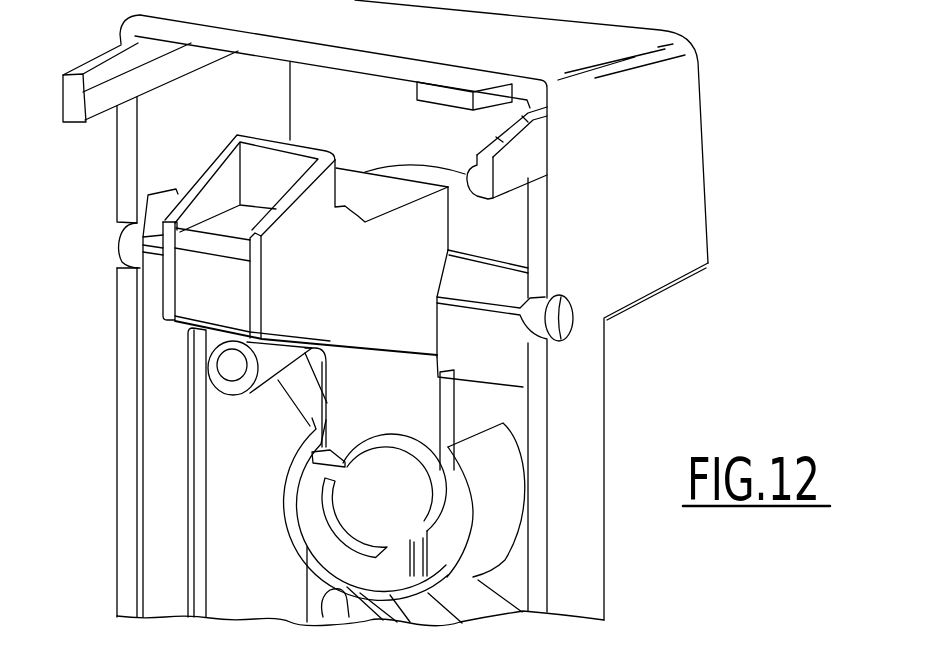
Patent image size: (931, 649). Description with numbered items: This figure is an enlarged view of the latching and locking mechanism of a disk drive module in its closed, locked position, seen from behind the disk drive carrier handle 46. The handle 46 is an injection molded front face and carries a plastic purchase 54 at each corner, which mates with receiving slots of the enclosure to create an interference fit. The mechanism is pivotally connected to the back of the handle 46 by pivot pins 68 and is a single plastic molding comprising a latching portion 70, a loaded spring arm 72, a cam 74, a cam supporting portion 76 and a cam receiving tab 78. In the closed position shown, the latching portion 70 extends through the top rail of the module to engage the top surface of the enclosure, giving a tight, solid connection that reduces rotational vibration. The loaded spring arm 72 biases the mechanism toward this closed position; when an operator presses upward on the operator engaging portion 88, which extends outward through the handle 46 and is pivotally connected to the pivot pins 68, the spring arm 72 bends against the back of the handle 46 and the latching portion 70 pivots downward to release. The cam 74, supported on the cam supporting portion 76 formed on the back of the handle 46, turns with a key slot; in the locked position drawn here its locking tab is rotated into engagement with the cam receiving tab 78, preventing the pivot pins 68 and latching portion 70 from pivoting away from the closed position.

The disk drive carrier handle 46 is at (712, 158).
The purchase 54 is at (522, 160).
The pivot pin 68 is at (567, 323).
The latching portion 70 is at (410, 245).
The loaded spring arm 72 is at (165, 373).
The cam 74 is at (366, 510).
The cam supporting portion 76 is at (503, 513).
The cam receiving tab 78 is at (402, 414).
The operator engaging portion 88 is at (433, 173).